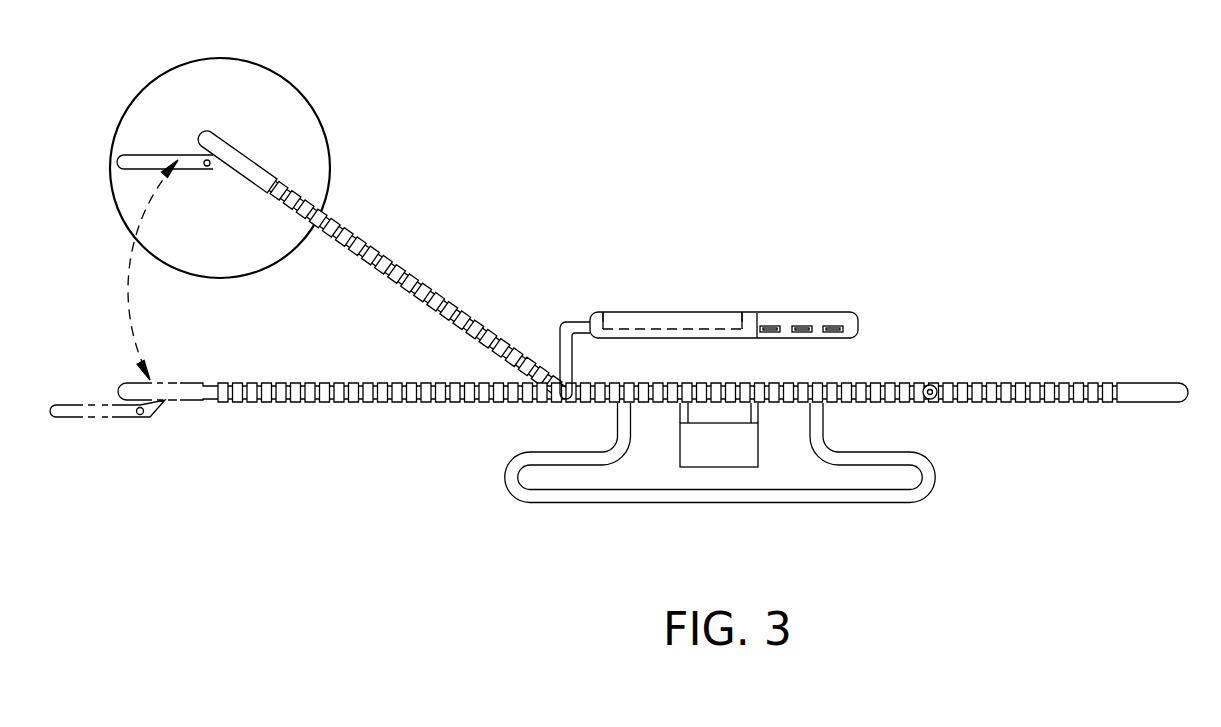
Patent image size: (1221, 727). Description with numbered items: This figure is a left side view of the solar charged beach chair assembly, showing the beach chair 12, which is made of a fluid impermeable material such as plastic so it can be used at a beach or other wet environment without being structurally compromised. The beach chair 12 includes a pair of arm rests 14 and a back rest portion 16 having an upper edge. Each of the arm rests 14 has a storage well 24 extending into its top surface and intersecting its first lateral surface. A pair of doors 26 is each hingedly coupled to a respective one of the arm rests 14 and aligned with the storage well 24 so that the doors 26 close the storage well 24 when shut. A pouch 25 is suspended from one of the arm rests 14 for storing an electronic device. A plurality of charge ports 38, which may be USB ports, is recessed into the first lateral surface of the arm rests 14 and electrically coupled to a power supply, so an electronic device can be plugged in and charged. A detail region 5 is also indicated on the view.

The detail view circle 5 is at (293, 80).
The beach chair 12 is at (502, 296).
The arm rests 14 is at (852, 311).
The back rest portion 16 is at (390, 248).
The storage well 24 is at (685, 329).
The pouch 25 is at (748, 467).
The doors 26 is at (758, 313).
The charge ports 38 is at (770, 332).